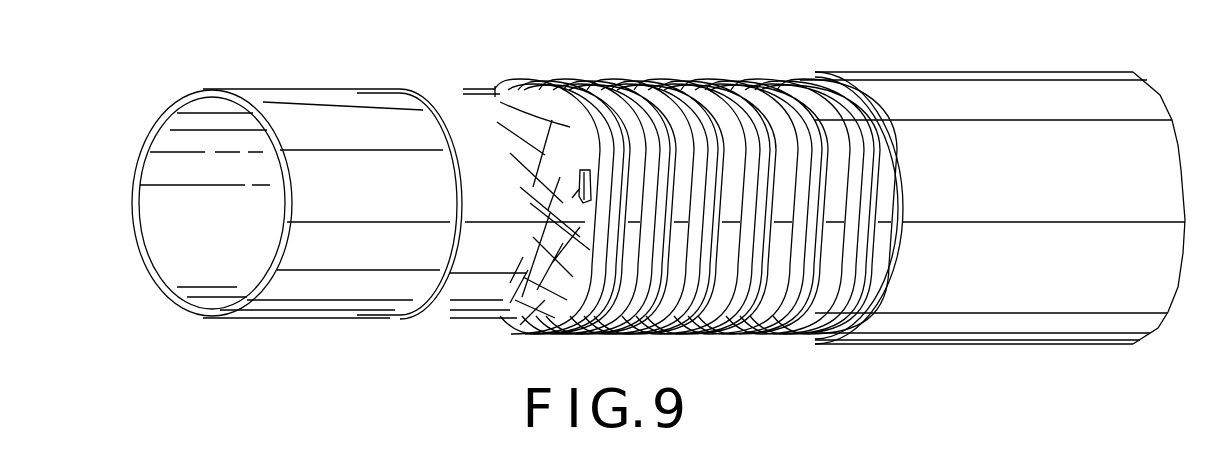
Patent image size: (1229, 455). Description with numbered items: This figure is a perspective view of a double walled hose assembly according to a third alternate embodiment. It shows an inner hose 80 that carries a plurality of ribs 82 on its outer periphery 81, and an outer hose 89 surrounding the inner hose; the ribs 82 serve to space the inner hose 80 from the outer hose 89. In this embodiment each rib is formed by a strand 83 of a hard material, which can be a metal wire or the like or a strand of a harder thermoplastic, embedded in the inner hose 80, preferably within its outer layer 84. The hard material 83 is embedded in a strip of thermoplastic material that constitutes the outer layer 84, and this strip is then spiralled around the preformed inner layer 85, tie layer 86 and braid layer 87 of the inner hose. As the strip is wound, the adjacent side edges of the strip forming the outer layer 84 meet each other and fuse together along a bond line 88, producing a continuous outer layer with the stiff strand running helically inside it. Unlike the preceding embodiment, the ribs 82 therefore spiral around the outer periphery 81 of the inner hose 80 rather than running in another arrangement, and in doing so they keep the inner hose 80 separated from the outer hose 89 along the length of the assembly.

The inner hose 80 is at (679, 200).
The outer periphery 81 is at (718, 332).
The ribs 82 is at (740, 90).
The strand 83 is at (568, 198).
The outer layer 84 is at (515, 325).
The inner layer 85 is at (271, 108).
The tie layer 86 is at (412, 92).
The braid layer 87 is at (497, 88).
The bond line 88 is at (587, 95).
The outer hose 89 is at (917, 92).